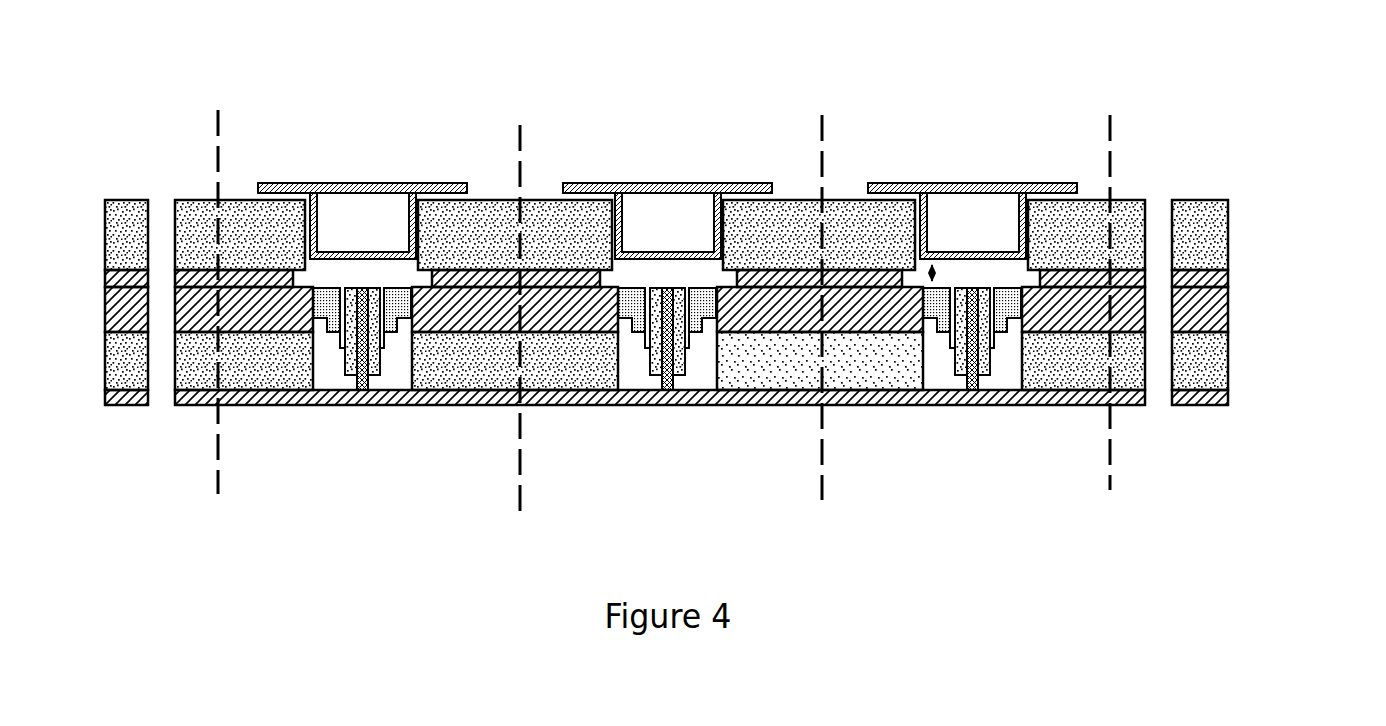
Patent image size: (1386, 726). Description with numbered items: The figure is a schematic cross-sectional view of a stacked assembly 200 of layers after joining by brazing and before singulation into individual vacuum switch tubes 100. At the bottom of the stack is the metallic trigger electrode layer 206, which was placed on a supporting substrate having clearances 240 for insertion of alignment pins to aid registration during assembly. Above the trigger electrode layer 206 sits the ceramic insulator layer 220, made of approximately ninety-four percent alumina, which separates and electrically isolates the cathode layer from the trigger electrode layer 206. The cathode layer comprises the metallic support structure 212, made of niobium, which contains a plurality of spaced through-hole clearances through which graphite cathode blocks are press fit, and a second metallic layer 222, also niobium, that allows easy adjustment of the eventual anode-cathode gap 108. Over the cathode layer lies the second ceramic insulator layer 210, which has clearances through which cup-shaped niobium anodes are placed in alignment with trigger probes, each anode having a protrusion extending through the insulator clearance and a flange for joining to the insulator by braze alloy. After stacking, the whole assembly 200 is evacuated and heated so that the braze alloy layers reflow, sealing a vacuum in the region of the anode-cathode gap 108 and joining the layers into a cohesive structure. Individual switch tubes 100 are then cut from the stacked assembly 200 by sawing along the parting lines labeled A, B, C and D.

The stacked assembly 200 is at (690, 53).
The vacuum switch tube 100 is at (957, 98).
The anode-cathode gap 108 is at (960, 266).
The clearances 240 is at (1168, 191).
The second ceramic insulator layer 210 is at (1238, 223).
The second metallic layer 222 is at (1238, 273).
The metallic support structure 212 is at (1238, 306).
The ceramic insulator layer 220 is at (1238, 356).
The trigger electrode layer 206 is at (1238, 403).